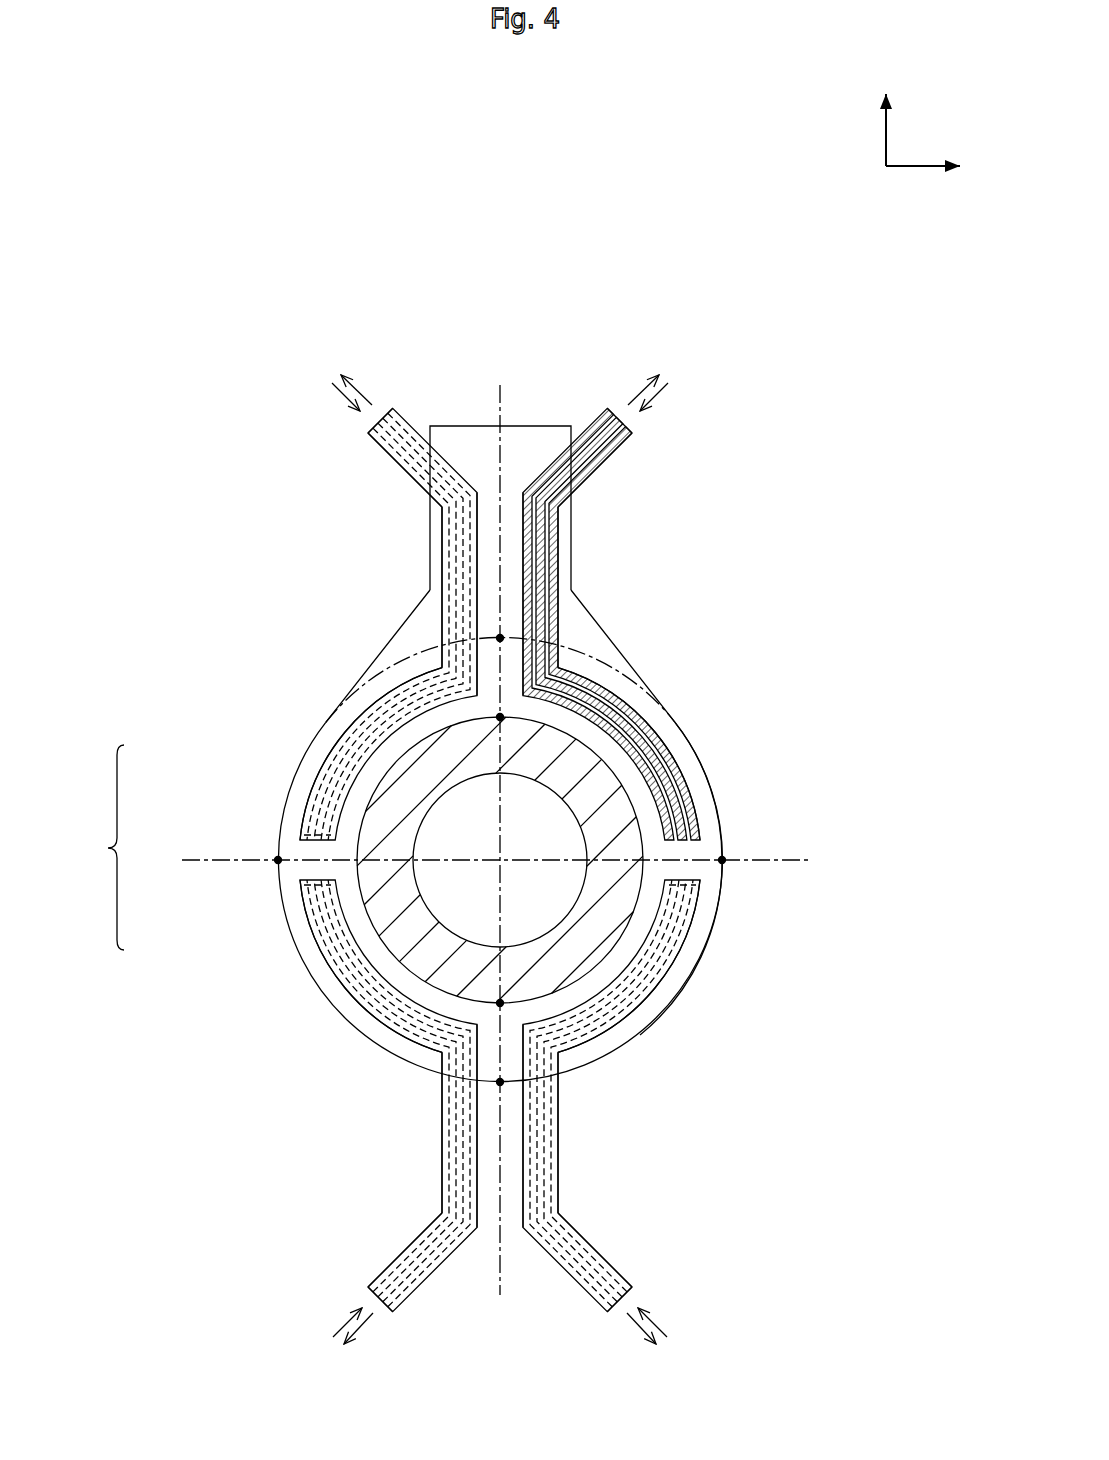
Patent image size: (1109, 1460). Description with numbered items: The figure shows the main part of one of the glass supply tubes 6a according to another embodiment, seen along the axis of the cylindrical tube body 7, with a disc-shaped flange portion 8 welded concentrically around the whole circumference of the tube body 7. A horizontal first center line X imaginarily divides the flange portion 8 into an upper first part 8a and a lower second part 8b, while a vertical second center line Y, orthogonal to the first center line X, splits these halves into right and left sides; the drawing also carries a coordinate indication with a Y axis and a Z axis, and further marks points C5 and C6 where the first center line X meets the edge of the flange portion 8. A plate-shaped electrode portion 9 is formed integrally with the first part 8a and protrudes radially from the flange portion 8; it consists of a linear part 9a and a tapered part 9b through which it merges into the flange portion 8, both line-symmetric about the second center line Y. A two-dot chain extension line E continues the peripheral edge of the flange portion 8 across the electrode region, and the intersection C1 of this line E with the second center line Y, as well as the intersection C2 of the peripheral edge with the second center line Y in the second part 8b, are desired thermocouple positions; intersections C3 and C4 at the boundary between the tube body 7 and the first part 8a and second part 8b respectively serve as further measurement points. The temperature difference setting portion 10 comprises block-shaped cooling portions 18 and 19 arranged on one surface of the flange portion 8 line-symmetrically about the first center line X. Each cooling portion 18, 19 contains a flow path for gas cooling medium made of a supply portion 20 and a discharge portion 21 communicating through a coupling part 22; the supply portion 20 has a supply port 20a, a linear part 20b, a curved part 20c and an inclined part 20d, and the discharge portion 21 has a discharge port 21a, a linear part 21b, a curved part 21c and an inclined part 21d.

The glass supply tube 6a is at (726, 298).
The tube body 7 is at (594, 776).
The flange portion 8 is at (532, 901).
The first part 8a is at (696, 755).
The second part 8b is at (677, 965).
The electrode portion 9 is at (500, 507).
The linear part 9a is at (557, 432).
The tapered part 9b is at (590, 612).
The temperature difference setting portion 10 is at (413, 859).
The cooling portion 18 is at (303, 790).
The cooling portion 19 is at (303, 940).
The supply portion 20 is at (492, 859).
The supply port 20a is at (634, 423).
The linear part 20b is at (556, 556).
The curved part 20c is at (648, 702).
The inclined part 20d is at (588, 477).
The discharge portion 21 is at (496, 862).
The discharge port 21a is at (626, 413).
The linear part 21b is at (529, 561).
The curved part 21c is at (562, 708).
The inclined part 21d is at (552, 461).
The coupling part 22 is at (703, 838).
The intersection C1 is at (497, 638).
The intersection C2 is at (503, 1082).
The intersection C3 is at (497, 717).
The intersection C4 is at (503, 1004).
The point C5 is at (277, 861).
The point C6 is at (723, 858).
The extension line E is at (605, 660).
The first center line X is at (787, 853).
The second center line Y is at (502, 388).
The Z axis Z is at (883, 116).